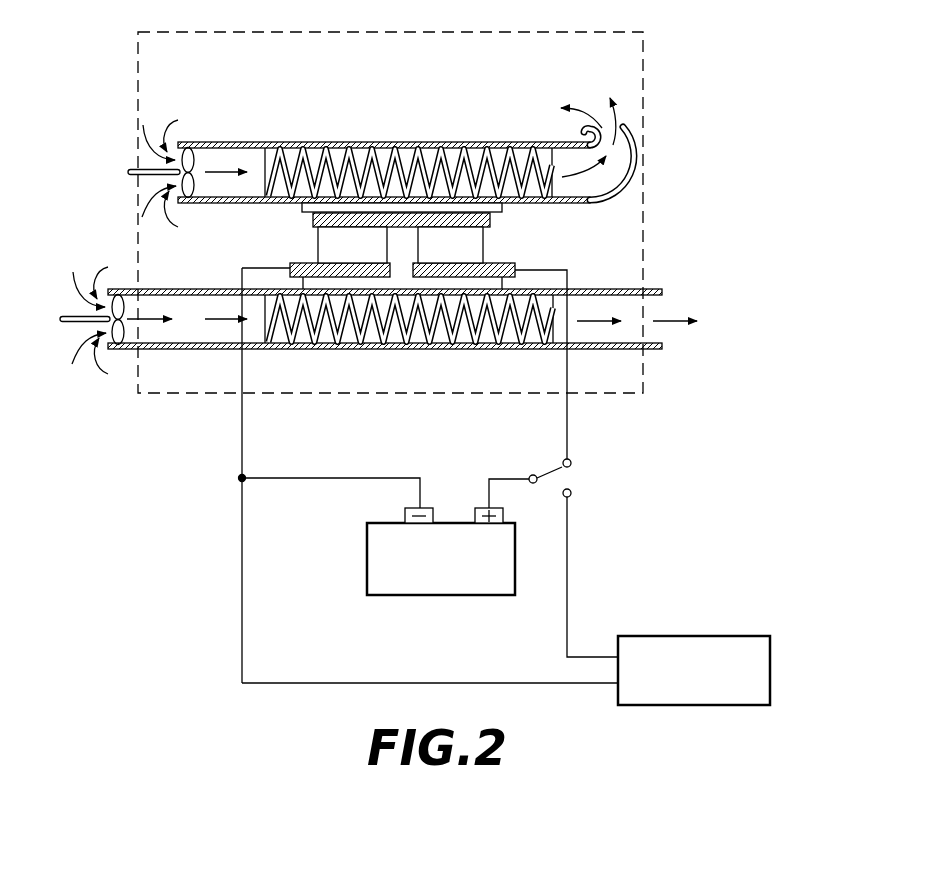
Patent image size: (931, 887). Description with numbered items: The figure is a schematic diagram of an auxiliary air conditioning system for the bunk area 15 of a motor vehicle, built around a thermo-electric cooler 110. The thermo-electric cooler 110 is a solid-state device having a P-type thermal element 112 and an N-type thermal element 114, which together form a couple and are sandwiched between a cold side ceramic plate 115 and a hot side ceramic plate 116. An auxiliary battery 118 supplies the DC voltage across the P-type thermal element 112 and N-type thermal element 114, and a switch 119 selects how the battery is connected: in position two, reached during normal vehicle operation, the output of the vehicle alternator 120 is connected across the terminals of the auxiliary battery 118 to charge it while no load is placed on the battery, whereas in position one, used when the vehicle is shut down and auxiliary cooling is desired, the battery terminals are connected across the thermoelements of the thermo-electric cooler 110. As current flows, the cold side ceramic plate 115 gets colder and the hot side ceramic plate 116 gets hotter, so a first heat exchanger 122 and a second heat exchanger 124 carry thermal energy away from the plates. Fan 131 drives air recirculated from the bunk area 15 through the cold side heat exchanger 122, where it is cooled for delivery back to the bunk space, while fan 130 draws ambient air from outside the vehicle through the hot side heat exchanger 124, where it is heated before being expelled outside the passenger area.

The bunk area 15 is at (519, 30).
The thermo-electric cooler 110 is at (537, 255).
The P-type thermal element 112 is at (318, 248).
The N-type thermal element 114 is at (483, 250).
The cold side ceramic plate 115 is at (302, 208).
The hot side ceramic plate 116 is at (303, 283).
The auxiliary battery 118 is at (372, 577).
The switch 119 is at (560, 472).
The vehicle alternator 120 is at (655, 636).
The first heat exchanger 122 is at (365, 145).
The second heat exchanger 124 is at (328, 350).
The fan 130 is at (132, 352).
The fan 131 is at (193, 152).